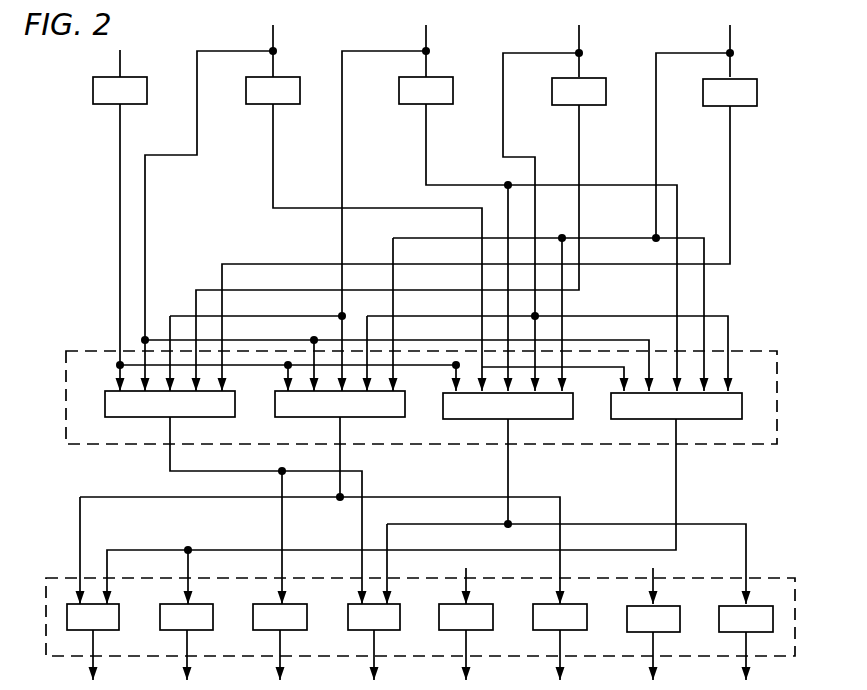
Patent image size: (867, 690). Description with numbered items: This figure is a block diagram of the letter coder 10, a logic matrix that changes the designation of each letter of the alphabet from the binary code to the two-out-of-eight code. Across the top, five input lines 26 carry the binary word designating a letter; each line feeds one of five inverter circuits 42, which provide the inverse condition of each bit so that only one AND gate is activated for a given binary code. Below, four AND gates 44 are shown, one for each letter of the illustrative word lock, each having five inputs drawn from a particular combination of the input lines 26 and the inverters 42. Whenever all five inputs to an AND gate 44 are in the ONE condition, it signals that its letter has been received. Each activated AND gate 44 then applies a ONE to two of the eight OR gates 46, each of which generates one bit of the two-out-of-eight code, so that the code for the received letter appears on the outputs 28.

The letter coder 10 is at (745, 271).
The input lines 26 is at (737, 42).
The inverter circuits 42 is at (758, 113).
The AND gates 44 is at (789, 374).
The OR gates 46 is at (806, 596).
The outputs 28 is at (757, 679).